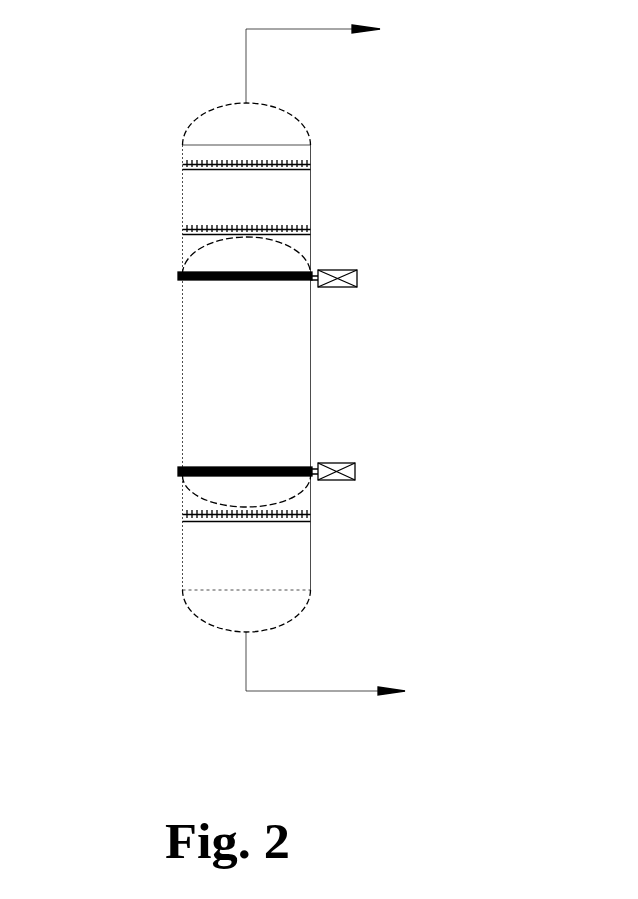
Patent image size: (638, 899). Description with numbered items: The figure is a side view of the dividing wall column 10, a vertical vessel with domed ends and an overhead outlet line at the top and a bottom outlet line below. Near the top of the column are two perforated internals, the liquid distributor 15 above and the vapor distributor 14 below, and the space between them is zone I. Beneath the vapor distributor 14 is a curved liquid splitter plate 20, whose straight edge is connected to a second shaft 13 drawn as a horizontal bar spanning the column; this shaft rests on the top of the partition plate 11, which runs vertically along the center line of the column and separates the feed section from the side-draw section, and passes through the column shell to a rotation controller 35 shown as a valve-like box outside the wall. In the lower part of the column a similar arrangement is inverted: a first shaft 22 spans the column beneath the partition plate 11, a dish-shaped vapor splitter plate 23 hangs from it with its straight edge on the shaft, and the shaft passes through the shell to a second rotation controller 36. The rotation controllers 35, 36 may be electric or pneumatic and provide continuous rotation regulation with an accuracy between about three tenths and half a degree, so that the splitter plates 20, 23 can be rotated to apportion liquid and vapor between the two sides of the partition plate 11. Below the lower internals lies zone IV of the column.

The dividing wall column 10 is at (182, 414).
The partition plate 11 is at (218, 307).
The second shaft 13 is at (223, 273).
The vapor distributor 14 is at (183, 230).
The liquid distributor 15 is at (183, 163).
The liquid splitter plate 20 is at (272, 260).
The first shaft 22 is at (182, 473).
The vapor splitter plate 23 is at (245, 497).
The rotation controller 35 is at (438, 310).
The rotation controller 36 is at (435, 503).